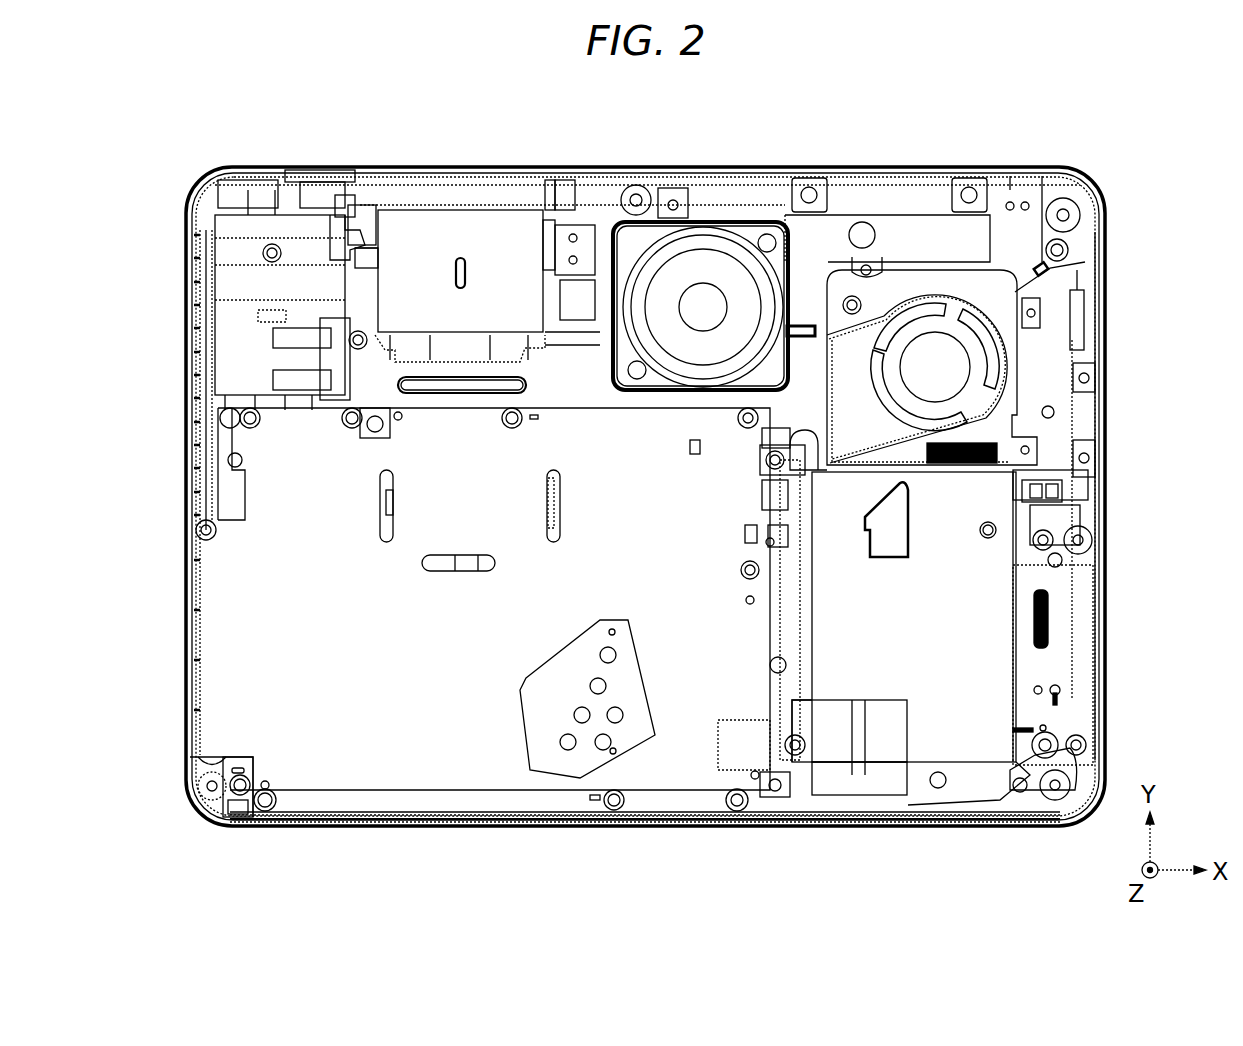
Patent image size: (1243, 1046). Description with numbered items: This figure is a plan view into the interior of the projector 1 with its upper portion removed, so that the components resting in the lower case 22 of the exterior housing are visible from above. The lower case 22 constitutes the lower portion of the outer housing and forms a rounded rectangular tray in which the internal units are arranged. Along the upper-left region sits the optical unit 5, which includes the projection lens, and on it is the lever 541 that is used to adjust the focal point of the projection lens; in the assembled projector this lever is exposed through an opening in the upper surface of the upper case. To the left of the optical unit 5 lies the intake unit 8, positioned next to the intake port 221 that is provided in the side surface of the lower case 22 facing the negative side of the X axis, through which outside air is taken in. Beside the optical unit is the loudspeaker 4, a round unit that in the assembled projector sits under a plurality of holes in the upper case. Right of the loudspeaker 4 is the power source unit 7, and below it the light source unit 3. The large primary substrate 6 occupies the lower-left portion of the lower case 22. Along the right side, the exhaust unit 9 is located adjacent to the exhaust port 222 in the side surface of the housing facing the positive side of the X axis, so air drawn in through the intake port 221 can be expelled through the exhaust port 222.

The projector 1 is at (1073, 122).
The light source unit 3 is at (975, 738).
The loudspeaker 4 is at (716, 272).
The optical unit 5 is at (477, 249).
The lever 541 is at (475, 270).
The primary substrate 6 is at (445, 665).
The power source unit 7 is at (840, 248).
The intake unit 8 is at (240, 312).
The exhaust unit 9 is at (1050, 616).
The lower case 22 is at (737, 828).
The intake port 221 is at (207, 254).
The exhaust port 222 is at (1095, 664).